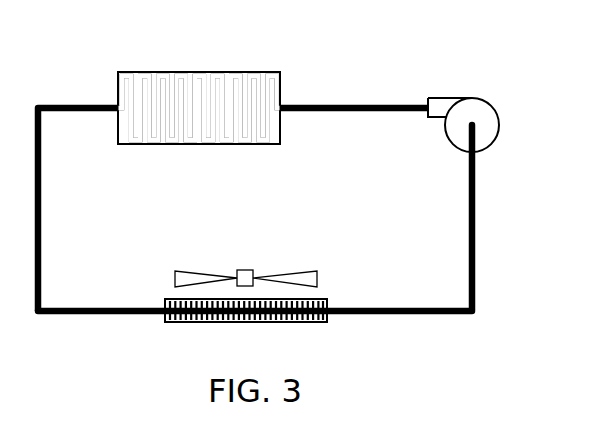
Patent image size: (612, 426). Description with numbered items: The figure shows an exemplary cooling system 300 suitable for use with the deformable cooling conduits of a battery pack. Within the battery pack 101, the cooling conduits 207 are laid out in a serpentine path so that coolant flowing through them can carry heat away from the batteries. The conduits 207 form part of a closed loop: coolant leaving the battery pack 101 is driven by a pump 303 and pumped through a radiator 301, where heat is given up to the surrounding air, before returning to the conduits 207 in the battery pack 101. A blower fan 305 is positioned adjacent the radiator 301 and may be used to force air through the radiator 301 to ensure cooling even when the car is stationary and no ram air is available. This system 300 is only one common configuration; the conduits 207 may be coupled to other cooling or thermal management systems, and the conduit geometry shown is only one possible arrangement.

The cooling system 300 is at (495, 62).
The battery pack 101 is at (185, 72).
The cooling conduits 207 is at (145, 92).
The pump 303 is at (446, 124).
The blower fan 305 is at (247, 270).
The radiator 301 is at (210, 322).